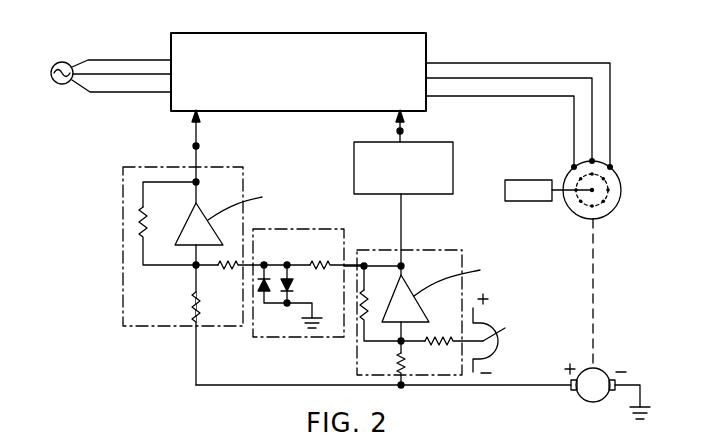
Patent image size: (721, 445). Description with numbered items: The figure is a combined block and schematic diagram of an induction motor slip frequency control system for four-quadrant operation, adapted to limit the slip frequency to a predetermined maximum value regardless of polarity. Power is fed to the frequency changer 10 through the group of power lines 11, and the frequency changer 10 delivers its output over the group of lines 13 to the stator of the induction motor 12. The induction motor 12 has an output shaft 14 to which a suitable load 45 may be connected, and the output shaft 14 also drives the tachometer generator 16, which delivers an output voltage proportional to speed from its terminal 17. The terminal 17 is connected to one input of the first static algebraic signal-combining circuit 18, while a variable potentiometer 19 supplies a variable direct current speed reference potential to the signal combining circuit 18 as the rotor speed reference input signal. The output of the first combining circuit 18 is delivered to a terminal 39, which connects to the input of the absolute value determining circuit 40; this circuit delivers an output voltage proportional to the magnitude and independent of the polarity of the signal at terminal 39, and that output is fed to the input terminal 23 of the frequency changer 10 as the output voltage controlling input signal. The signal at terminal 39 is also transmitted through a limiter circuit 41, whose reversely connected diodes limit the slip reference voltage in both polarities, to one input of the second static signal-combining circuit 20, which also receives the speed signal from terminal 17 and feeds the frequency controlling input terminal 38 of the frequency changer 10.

The frequency changer 10 is at (380, 101).
The group of power lines 11 is at (157, 62).
The induction motor 12 is at (622, 186).
The group of lines 13 is at (549, 63).
The output shaft 14 is at (595, 243).
The tachometer generator 16 is at (606, 371).
The terminal 17 is at (575, 391).
The first static algebraic signal-combining circuit 18 is at (357, 357).
The variable potentiometer 19 is at (496, 332).
The second static signal-combining circuit 20 is at (123, 285).
The input terminal 23 is at (404, 130).
The frequency controlling input terminal 38 is at (193, 146).
The terminal 39 is at (400, 263).
The absolute value determining circuit 40 is at (354, 147).
The limiter circuit 41 is at (305, 229).
The load 45 is at (525, 180).